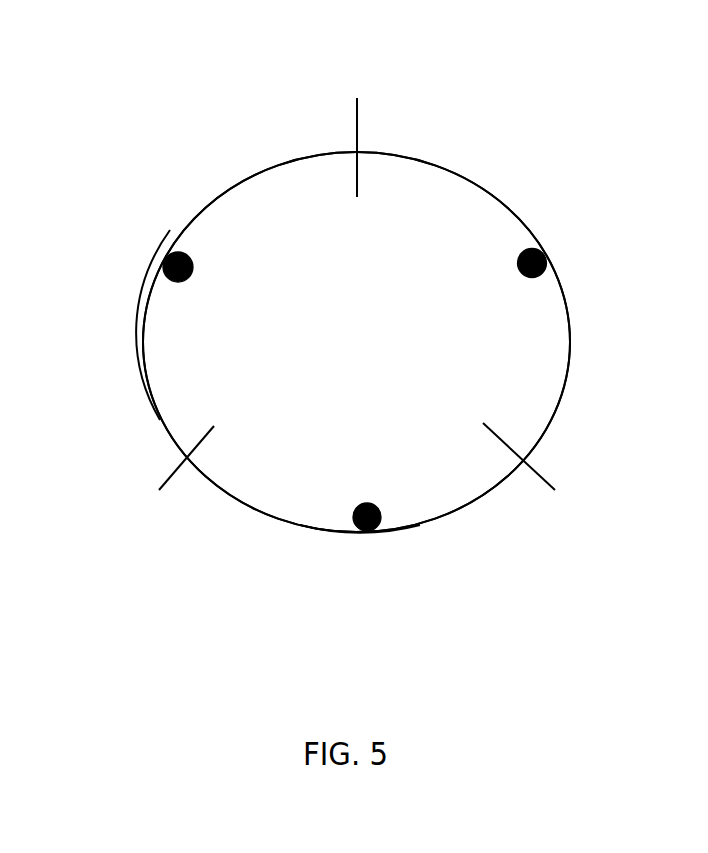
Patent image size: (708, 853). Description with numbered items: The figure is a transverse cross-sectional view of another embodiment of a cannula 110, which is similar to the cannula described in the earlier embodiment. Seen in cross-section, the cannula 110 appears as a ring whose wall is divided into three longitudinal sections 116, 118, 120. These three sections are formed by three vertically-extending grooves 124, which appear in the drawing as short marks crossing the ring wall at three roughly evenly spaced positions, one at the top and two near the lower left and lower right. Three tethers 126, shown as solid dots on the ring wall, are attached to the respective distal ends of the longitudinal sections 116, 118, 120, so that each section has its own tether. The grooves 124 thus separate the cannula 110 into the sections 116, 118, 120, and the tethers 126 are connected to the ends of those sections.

The cannula 110 is at (170, 145).
The longitudinal section 116 is at (487, 190).
The longitudinal section 118 is at (402, 528).
The longitudinal section 120 is at (145, 315).
The vertically-extending grooves 124 is at (357, 151).
The tethers 126 is at (547, 263).